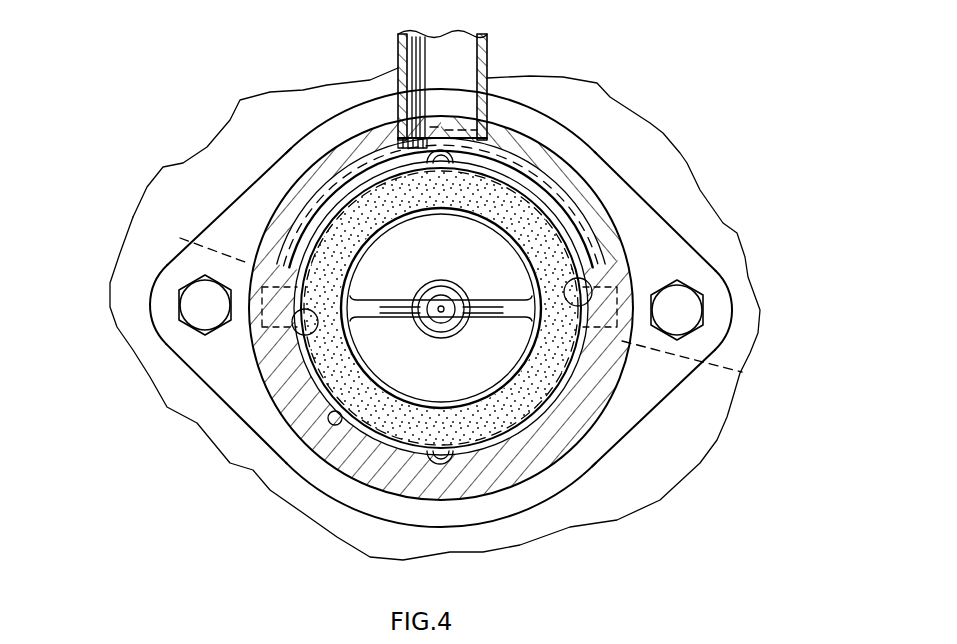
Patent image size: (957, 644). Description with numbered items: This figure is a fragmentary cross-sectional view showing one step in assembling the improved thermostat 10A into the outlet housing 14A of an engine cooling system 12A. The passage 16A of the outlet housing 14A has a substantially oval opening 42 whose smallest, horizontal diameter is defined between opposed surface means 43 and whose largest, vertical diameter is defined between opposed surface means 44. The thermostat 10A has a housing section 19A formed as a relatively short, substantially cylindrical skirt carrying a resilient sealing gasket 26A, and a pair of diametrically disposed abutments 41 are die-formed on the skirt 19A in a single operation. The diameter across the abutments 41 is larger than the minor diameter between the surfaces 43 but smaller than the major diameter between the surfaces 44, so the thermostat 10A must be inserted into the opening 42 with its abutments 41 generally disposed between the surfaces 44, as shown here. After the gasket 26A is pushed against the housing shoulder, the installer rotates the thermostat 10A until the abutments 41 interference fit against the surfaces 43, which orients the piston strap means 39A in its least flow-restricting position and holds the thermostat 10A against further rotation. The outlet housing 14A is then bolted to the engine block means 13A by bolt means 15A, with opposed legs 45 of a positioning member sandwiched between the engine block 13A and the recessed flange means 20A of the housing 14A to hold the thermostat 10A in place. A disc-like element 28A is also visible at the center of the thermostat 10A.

The thermostat 10A is at (540, 200).
The engine cooling system 12A is at (640, 83).
The engine block means 13A is at (723, 224).
The outlet housing means 14A is at (600, 425).
The bolt means 15A is at (193, 311).
The passage means 16A is at (333, 417).
The housing section (short cylindrical skirt) 19A is at (363, 187).
The recessed flange means 20A is at (688, 163).
The resilient sealing gasket means 26A is at (395, 443).
The end disc 28A is at (467, 378).
The piston strap means 39A is at (412, 300).
The abutments 41 is at (441, 152).
The oval opening 42 is at (323, 207).
The opposed surface means (minor diameter) 43 is at (582, 279).
The opposed surface means (major diameter) 44 is at (397, 140).
The opposed legs 45 is at (464, 312).